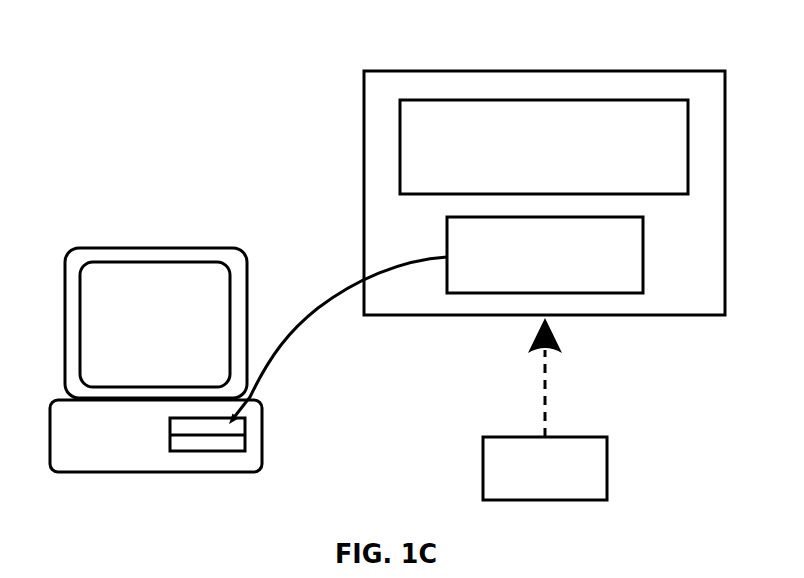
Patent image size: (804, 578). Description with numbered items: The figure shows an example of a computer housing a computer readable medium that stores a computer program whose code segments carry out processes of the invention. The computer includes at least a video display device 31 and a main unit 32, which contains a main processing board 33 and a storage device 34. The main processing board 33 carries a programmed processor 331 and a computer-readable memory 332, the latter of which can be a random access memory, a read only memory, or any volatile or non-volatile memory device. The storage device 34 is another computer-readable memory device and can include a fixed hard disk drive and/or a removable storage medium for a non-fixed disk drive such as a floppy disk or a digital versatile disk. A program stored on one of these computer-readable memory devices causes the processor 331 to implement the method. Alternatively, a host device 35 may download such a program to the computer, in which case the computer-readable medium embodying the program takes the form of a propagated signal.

The video display device 31 is at (97, 247).
The main unit 32 is at (50, 407).
The main processing board 33 is at (425, 70).
The programmed processor 331 is at (592, 98).
The computer-readable memory 332 is at (645, 252).
The storage device 34 is at (250, 442).
The host device 35 is at (607, 465).